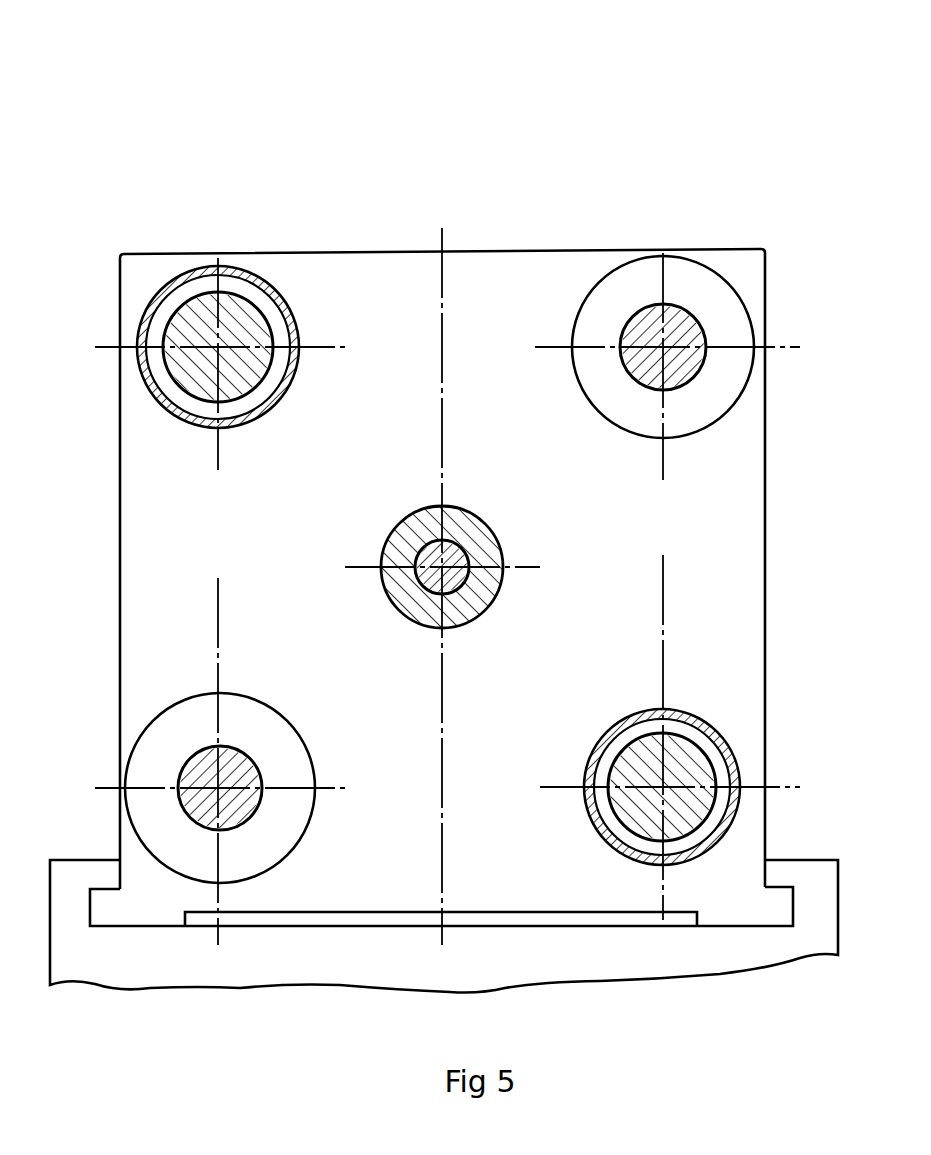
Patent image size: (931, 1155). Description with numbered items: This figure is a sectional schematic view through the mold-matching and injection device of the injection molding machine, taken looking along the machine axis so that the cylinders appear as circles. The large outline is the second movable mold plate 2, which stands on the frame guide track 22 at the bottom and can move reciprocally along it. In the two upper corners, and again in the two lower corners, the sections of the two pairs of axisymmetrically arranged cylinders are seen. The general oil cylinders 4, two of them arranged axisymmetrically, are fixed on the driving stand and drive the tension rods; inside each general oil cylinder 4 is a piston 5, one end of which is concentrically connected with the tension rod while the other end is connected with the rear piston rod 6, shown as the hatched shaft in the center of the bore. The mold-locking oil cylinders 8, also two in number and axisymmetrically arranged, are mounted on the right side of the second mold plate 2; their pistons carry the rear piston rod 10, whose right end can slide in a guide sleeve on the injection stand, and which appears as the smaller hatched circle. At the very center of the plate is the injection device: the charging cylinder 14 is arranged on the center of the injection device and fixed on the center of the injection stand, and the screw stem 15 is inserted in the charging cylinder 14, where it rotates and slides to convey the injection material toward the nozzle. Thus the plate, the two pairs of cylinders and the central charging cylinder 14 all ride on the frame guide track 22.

The second movable mold plate 2 is at (746, 270).
The general oil cylinder 4 is at (160, 292).
The piston 5 is at (248, 280).
The rear piston rod 6 is at (211, 322).
The mold-locking oil cylinder 8 is at (606, 298).
The rear piston rod 10 is at (683, 312).
The charging cylinder 14 is at (418, 505).
The screw stem 15 is at (455, 540).
The frame guide track 22 is at (153, 962).